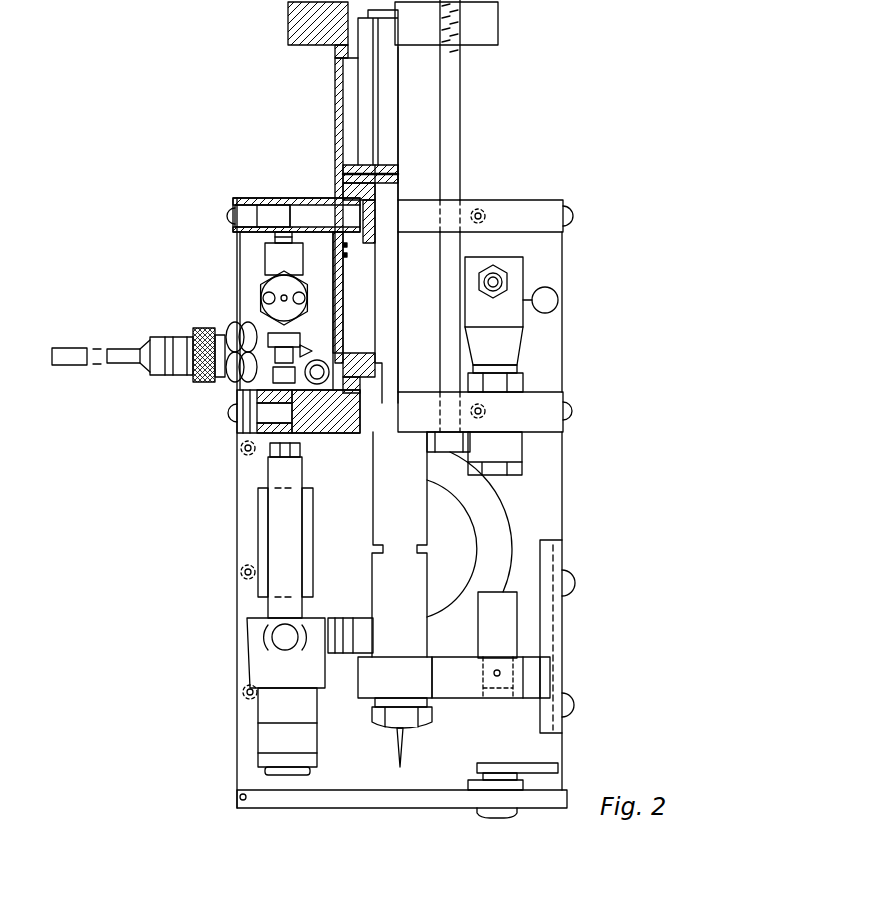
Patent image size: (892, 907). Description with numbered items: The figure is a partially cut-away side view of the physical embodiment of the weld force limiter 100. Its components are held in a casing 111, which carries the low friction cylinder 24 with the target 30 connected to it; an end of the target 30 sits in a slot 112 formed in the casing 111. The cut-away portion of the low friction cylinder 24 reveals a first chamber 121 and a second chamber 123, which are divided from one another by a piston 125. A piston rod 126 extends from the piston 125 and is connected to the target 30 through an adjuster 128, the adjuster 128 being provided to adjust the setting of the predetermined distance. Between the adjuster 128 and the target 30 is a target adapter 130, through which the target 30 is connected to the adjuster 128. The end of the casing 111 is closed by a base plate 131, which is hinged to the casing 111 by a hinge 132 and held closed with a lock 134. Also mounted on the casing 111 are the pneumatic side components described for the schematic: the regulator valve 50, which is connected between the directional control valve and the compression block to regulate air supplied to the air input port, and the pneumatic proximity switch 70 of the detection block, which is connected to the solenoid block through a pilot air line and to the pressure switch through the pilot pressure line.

The weld force limiter 100 is at (628, 457).
The casing 111 is at (563, 395).
The slot 112 is at (560, 640).
The first chamber 121 is at (352, 88).
The second chamber 123 is at (348, 260).
The piston 125 is at (355, 170).
The piston rod 126 is at (390, 518).
The adjuster 128 is at (373, 713).
The target adapter 130 is at (470, 700).
The base plate 131 is at (370, 806).
The hinge 132 is at (243, 800).
The lock 134 is at (513, 816).
The low friction cylinder 24 is at (450, 137).
The target 30 is at (505, 613).
The regulator valve 50 is at (250, 658).
The pneumatic proximity switch 70 is at (515, 272).